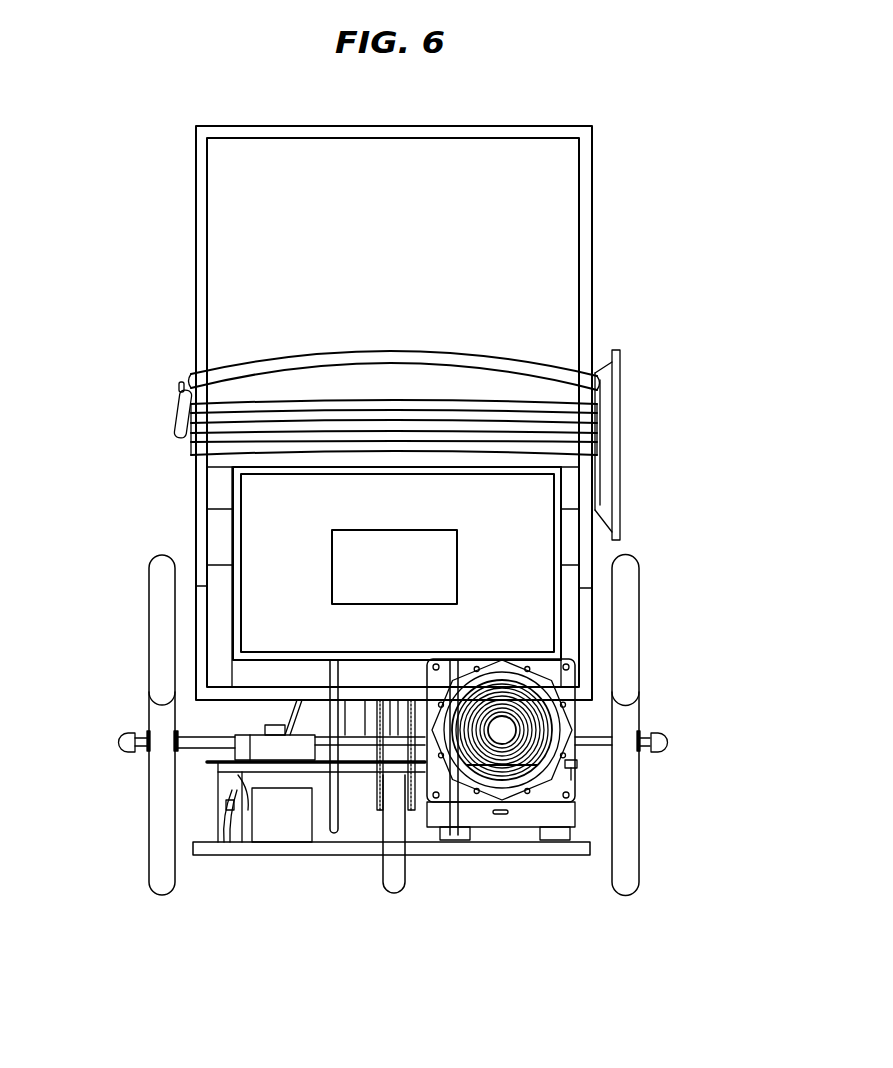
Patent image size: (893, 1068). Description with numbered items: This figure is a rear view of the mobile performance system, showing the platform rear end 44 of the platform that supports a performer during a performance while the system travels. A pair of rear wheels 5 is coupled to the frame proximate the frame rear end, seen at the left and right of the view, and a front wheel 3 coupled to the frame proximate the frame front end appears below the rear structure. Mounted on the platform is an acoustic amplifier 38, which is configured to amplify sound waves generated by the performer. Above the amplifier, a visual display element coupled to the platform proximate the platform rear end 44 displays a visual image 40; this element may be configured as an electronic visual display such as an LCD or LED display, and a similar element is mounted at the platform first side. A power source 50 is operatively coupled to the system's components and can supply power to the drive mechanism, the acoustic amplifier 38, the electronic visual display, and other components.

The front wheel 3 is at (396, 877).
The rear wheels 5 is at (163, 812).
The acoustic amplifier 38 is at (500, 728).
The visual image 40 is at (394, 567).
The platform rear end 44 is at (232, 692).
The power source 50 is at (280, 812).